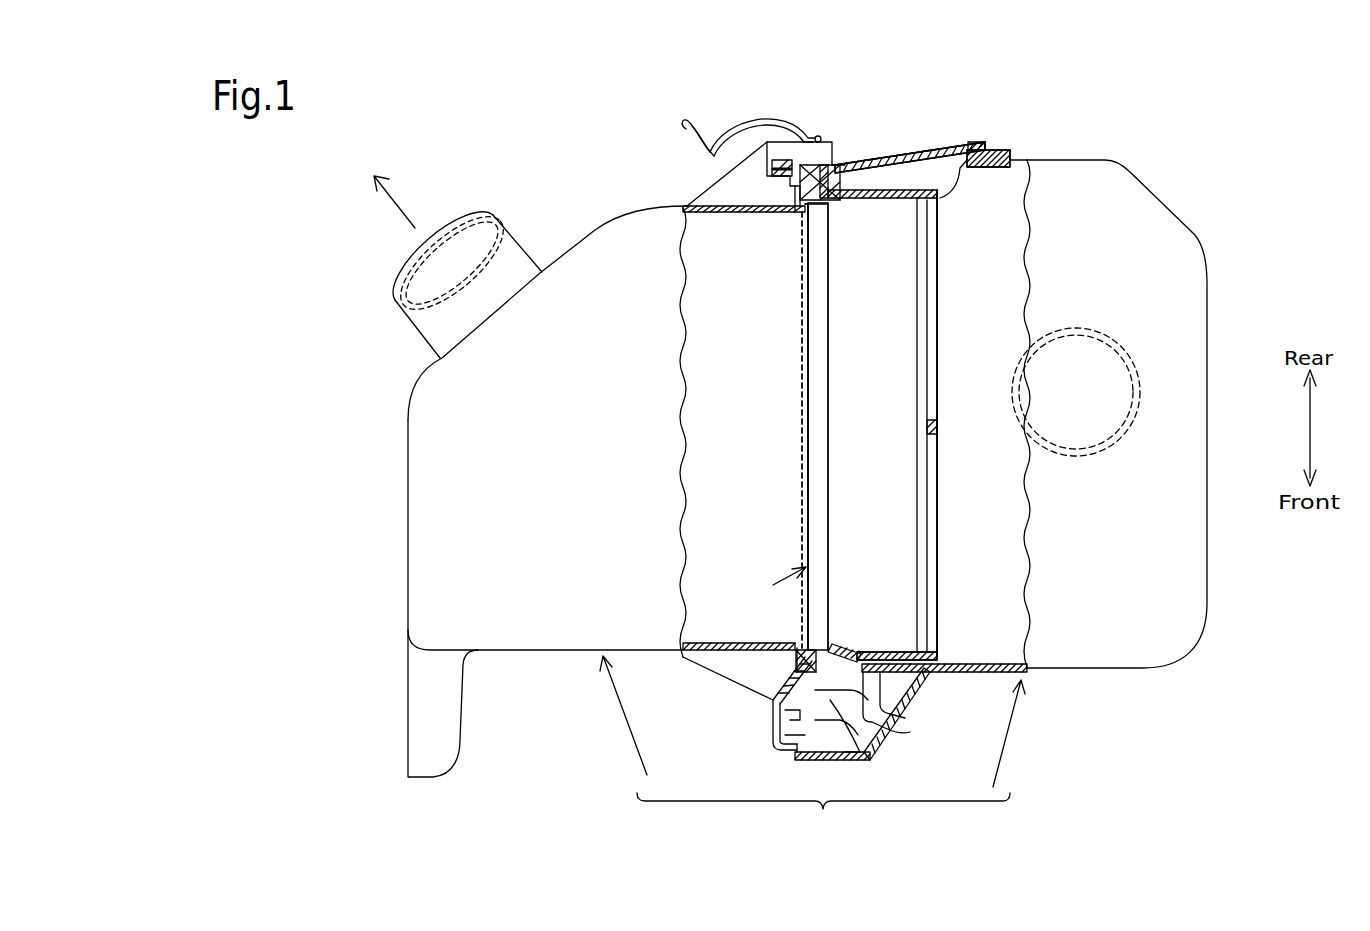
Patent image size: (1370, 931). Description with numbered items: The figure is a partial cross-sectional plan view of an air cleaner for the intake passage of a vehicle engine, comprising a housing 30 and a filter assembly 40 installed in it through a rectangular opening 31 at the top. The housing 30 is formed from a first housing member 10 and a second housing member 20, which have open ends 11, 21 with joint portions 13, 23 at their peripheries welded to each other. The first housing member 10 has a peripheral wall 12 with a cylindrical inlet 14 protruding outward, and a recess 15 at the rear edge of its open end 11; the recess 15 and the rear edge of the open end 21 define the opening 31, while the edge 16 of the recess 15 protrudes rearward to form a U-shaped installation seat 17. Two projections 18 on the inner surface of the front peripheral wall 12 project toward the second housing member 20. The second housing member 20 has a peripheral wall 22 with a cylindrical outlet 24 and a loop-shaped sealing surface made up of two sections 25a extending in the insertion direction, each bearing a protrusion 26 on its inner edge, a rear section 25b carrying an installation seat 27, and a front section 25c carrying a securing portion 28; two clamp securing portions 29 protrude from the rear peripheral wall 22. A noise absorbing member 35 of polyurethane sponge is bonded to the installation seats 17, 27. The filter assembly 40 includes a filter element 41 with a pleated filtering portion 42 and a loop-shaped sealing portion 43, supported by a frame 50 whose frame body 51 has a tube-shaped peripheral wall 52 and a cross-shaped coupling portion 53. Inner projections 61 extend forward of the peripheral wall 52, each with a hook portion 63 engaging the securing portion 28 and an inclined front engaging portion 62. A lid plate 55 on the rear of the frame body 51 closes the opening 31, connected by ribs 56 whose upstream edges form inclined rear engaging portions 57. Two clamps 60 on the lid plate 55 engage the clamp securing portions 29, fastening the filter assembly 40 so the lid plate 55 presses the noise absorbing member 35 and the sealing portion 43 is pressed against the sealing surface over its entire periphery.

The first housing member 10 is at (1005, 741).
The open end 11 is at (920, 674).
The peripheral wall 12 is at (1192, 526).
The joint portion 13 is at (795, 757).
The cylindrical inlet 14 is at (1077, 457).
The recess 15 is at (970, 143).
The edge 16 is at (988, 158).
The installation seat 17 is at (1012, 150).
The projection 18 is at (869, 652).
The second housing member 20 is at (634, 729).
The open end 21 is at (797, 215).
The peripheral wall 22 is at (410, 585).
The joint portion 23 is at (815, 762).
The cylindrical outlet 24 is at (428, 330).
The section 25a is at (803, 462).
The section 25b is at (812, 178).
The section 25c is at (795, 680).
The protrusion 26 is at (830, 436).
The installation seat 27 is at (765, 172).
The securing portion 28 is at (875, 738).
The clamp securing portion 29 is at (693, 176).
The housing 30 is at (823, 817).
The opening 31 is at (910, 153).
The noise absorbing member 35 is at (790, 160).
The filter assembly 40 is at (872, 422).
The filter element 41 is at (754, 426).
The filtering portion 42 is at (826, 368).
The sealing portion 43 is at (793, 208).
The frame 50 is at (946, 261).
The frame body 51 is at (897, 656).
The peripheral wall 52 is at (908, 648).
The coupling portion 53 is at (942, 475).
The lid plate 55 is at (903, 155).
The rib 56 is at (888, 198).
The rear engaging portion 57 is at (943, 196).
The clamp 60 is at (752, 118).
The inner projection 61 is at (772, 740).
The front engaging portion 62 is at (880, 700).
The hook portion 63 is at (852, 758).